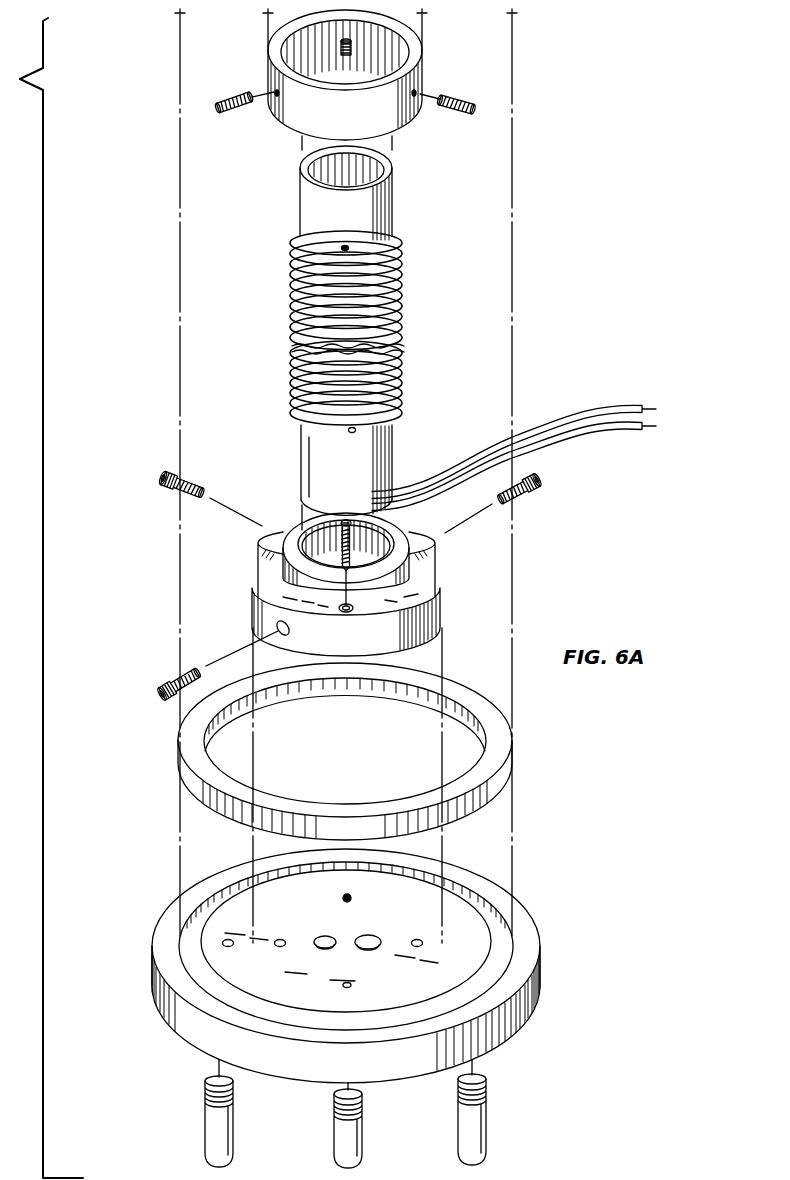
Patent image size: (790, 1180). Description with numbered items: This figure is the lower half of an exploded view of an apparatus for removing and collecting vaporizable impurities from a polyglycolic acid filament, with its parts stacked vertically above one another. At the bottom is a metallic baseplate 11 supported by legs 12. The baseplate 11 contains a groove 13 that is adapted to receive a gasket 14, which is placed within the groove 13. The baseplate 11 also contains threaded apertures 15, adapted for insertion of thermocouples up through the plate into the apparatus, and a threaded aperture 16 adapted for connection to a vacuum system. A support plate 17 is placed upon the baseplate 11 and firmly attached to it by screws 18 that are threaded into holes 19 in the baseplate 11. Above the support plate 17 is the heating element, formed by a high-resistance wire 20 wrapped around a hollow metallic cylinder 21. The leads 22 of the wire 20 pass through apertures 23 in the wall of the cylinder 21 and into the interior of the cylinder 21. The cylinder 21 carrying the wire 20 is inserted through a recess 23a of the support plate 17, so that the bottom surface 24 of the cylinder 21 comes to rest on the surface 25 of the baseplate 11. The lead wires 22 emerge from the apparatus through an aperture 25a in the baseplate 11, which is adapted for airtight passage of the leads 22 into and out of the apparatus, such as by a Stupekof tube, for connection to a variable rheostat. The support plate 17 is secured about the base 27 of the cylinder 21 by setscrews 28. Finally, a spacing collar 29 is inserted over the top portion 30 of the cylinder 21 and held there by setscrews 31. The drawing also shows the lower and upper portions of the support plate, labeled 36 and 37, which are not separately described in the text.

The baseplate 11 is at (541, 963).
The legs 12 is at (333, 1128).
The groove 13 is at (495, 937).
The gasket 14 is at (505, 746).
The threaded apertures 15 is at (417, 940).
The threaded aperture 16 is at (375, 936).
The support plate 17 is at (348, 577).
The screws 18 is at (355, 547).
The holes 19 is at (352, 897).
The high-resistance wire 20 is at (402, 298).
The hollow metallic cylinder 21 is at (300, 213).
The leads 22 is at (590, 420).
The apertures 23 is at (345, 245).
The recess 23a is at (303, 545).
The bottom surface 24 is at (300, 508).
The surface 25 is at (455, 912).
The aperture 25a is at (322, 937).
The base 27 is at (395, 446).
The setscrews 28 is at (163, 487).
The spacing collar 29 is at (270, 66).
The top portion 30 is at (300, 180).
The setscrews 31 is at (354, 47).
The collar body 36 is at (290, 604).
The collar boss 37 is at (296, 571).